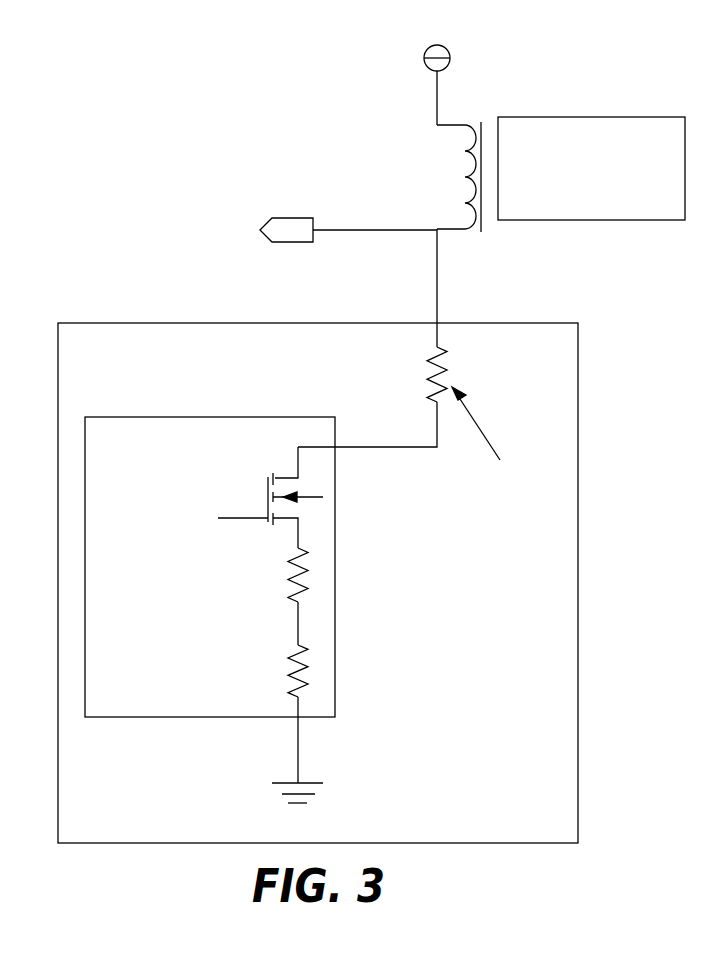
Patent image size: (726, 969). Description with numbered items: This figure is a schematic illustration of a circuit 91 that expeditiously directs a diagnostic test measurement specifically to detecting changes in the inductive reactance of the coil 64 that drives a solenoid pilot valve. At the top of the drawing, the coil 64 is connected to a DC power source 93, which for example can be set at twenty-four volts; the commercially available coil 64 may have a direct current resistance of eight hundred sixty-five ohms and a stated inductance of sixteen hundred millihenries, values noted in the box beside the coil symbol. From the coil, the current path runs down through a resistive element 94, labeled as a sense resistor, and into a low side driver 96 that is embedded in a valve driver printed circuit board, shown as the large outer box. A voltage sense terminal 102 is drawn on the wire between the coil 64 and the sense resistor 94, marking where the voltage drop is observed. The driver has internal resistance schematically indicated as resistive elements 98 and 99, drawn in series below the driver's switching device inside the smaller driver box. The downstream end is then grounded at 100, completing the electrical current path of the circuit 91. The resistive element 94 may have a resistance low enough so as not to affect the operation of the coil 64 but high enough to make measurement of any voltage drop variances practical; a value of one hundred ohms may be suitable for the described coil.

The circuit 91 is at (318, 132).
The DC power source 93 is at (424, 55).
The coil 64 is at (462, 178).
The voltage sense terminal (VSense) 102 is at (337, 228).
The resistive element 94 is at (445, 373).
The low side driver 96 is at (297, 424).
The resistive element 98 is at (302, 578).
The resistive element 99 is at (302, 672).
The ground 100 is at (288, 786).